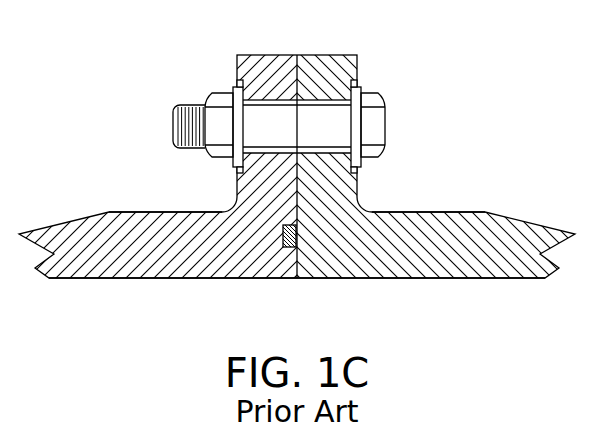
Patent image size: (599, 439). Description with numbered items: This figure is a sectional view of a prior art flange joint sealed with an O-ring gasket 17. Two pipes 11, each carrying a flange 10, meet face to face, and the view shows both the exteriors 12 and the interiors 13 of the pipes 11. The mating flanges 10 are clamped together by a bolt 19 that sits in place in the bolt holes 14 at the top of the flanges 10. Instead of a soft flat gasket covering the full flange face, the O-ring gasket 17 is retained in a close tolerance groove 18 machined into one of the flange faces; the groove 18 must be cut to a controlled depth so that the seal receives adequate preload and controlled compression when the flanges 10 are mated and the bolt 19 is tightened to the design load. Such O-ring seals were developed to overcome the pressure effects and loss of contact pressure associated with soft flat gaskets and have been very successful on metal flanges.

The flange 10 is at (247, 188).
The pipe 11 is at (170, 222).
The exterior 12 is at (118, 200).
The interior 13 is at (115, 293).
The bolt hole 14 is at (257, 101).
The O-ring gasket 17 is at (297, 236).
The groove 18 is at (283, 228).
The bolt 19 is at (328, 118).